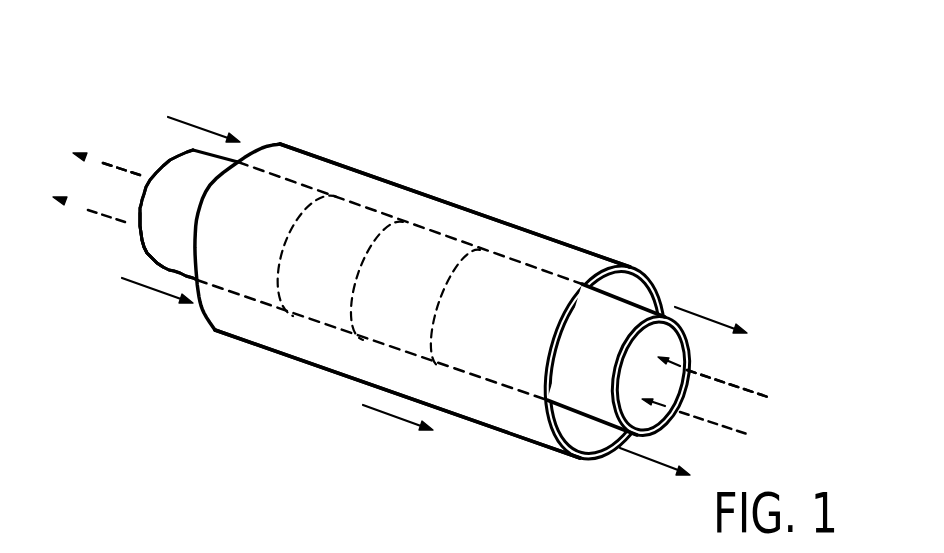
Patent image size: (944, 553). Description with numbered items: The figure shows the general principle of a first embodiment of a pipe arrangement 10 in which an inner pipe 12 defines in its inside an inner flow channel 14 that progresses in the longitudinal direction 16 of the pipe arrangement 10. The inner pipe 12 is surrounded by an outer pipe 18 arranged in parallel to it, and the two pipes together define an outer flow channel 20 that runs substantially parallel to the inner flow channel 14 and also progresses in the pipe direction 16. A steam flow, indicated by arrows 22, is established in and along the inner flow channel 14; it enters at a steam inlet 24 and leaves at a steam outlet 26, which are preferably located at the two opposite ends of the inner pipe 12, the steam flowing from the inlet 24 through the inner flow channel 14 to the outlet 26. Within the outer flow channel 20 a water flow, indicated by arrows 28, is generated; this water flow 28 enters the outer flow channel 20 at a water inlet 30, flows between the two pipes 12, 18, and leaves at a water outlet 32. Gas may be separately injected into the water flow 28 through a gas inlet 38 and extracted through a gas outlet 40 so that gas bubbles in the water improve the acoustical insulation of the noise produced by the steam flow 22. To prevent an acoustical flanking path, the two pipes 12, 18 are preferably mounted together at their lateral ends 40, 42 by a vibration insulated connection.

The pipe arrangement 10 is at (388, 125).
The inner pipe 12 is at (572, 365).
The inner flow channel 14 is at (397, 315).
The longitudinal direction 16 is at (393, 417).
The outer pipe 18 is at (255, 357).
The outer flow channel 20 is at (480, 237).
The steam flow 22 is at (112, 163).
The steam inlet 24 is at (627, 392).
The steam outlet 26 is at (140, 233).
The water flow 28 is at (203, 127).
The water inlet 30 is at (213, 198).
The water outlet 32 is at (627, 290).
The gas inlet 38 is at (168, 215).
The gas outlet 40 is at (127, 207).
The lateral end 42 is at (737, 413).